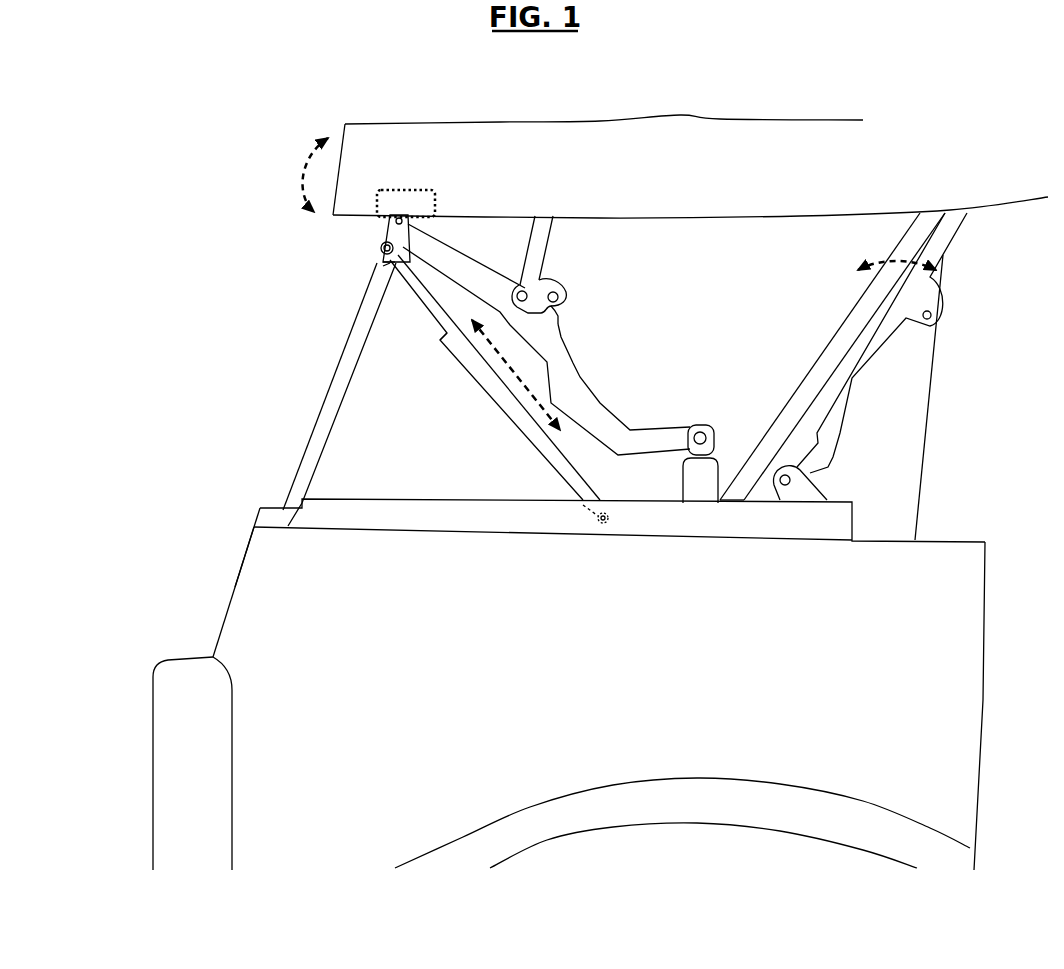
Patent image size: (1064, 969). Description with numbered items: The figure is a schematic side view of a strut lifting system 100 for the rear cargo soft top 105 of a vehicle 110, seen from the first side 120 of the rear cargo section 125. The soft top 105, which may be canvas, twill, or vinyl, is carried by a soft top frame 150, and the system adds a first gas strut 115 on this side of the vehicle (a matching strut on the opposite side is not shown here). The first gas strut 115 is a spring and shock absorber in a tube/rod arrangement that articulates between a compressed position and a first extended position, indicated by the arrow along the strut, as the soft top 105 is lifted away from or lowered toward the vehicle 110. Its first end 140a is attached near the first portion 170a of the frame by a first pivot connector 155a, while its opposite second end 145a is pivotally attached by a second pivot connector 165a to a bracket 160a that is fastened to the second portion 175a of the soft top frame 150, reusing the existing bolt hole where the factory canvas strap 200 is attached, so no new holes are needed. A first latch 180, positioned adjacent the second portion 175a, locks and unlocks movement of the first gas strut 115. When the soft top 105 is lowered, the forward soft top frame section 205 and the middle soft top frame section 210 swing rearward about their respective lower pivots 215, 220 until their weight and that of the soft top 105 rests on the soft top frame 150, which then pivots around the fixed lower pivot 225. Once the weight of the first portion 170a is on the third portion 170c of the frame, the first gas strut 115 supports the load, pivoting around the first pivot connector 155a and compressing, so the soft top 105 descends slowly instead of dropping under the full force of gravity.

The strut lifting system 100 is at (490, 420).
The rear cargo soft top 105 is at (472, 135).
The vehicle 110 is at (218, 631).
The first gas strut 115 is at (468, 350).
The first side 120 is at (588, 543).
The rear cargo section 125 is at (270, 588).
The first end 140a is at (604, 507).
The second end 145a is at (385, 262).
The soft top frame 150 is at (388, 228).
The first pivot connector 155a is at (603, 522).
The bracket 160a is at (395, 262).
The second pivot connector 165a is at (390, 252).
The first portion 170a is at (587, 522).
The third portion 170c is at (568, 387).
The second portion 175a is at (390, 238).
The first latch 180 is at (398, 200).
The canvas strap 200 is at (327, 420).
The forward soft top frame section 205 is at (850, 377).
The middle soft top frame section 210 is at (846, 336).
The lower pivot 215 is at (782, 468).
The lower pivot 220 is at (723, 505).
The fixed lower pivot 225 is at (704, 437).